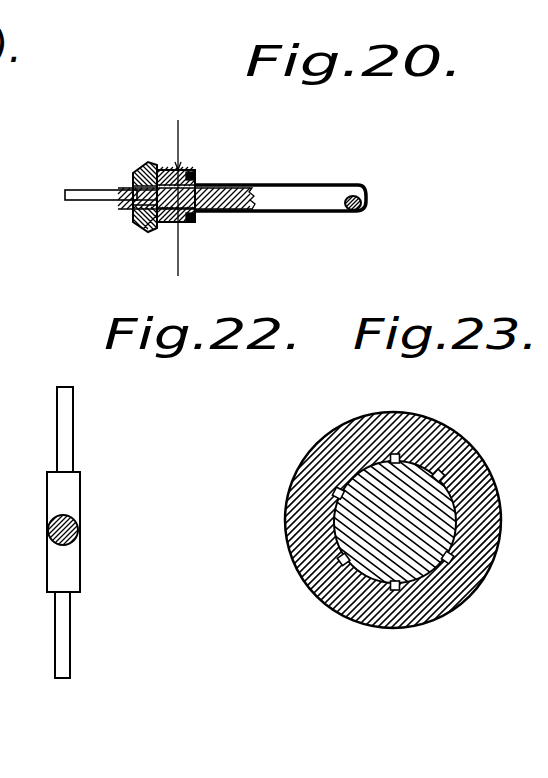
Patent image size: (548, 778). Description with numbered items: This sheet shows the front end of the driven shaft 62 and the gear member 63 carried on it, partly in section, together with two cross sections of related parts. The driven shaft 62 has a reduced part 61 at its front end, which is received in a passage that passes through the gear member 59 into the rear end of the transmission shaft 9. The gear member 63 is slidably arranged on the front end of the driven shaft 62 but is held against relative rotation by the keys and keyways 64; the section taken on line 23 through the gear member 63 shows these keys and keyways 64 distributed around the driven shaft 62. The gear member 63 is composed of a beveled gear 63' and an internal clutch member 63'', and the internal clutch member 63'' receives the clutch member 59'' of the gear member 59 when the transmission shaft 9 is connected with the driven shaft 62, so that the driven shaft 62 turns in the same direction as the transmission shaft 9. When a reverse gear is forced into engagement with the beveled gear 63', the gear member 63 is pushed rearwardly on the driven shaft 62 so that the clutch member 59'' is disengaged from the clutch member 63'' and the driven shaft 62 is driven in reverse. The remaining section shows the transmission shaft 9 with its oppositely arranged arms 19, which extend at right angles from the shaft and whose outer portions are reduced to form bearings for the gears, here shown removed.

In FIG. 22, the transmission shaft 9 is at (82, 525).
In FIG. 22, the arms 19 is at (72, 481).
In FIG. 20, the section line 23— 23 is at (179, 201).
In FIG. 20, the gear member 59 is at (9, 130).
In FIG. 20, the clutch member 59'' is at (18, 162).
In FIG. 20, the reduced part 61 is at (96, 203).
In FIG. 20, the driven shaft 62 is at (307, 192).
In FIG. 23, the driven shaft 62 is at (352, 533).
In FIG. 20, the gear member 63 is at (167, 173).
In FIG. 23, the gear member 63 is at (414, 520).
In FIG. 20, the beveled gear 63' is at (143, 234).
In FIG. 20, the internal clutch member 63'' is at (123, 190).
In FIG. 20, the keys and keyways 64 is at (193, 172).
In FIG. 23, the keys and keyways 64 is at (393, 458).